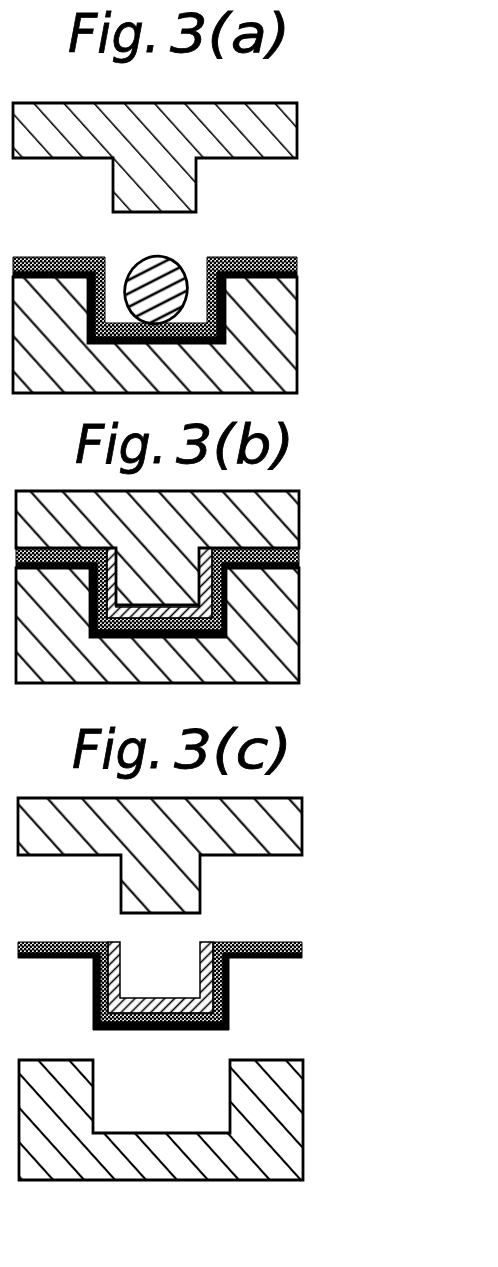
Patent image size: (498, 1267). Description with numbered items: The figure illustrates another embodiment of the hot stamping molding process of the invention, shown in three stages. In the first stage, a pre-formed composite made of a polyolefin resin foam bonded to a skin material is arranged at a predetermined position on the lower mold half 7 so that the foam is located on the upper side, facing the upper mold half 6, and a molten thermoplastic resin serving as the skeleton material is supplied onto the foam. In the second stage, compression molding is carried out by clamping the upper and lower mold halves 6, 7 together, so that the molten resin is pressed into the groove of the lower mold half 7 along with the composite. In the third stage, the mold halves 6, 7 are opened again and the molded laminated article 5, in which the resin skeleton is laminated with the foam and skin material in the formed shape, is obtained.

The molded laminated article 5 is at (198, 953).
In FIG. 3b, the upper mold half 6 is at (299, 520).
In FIG. 3b, the lower mold half 7 is at (299, 640).